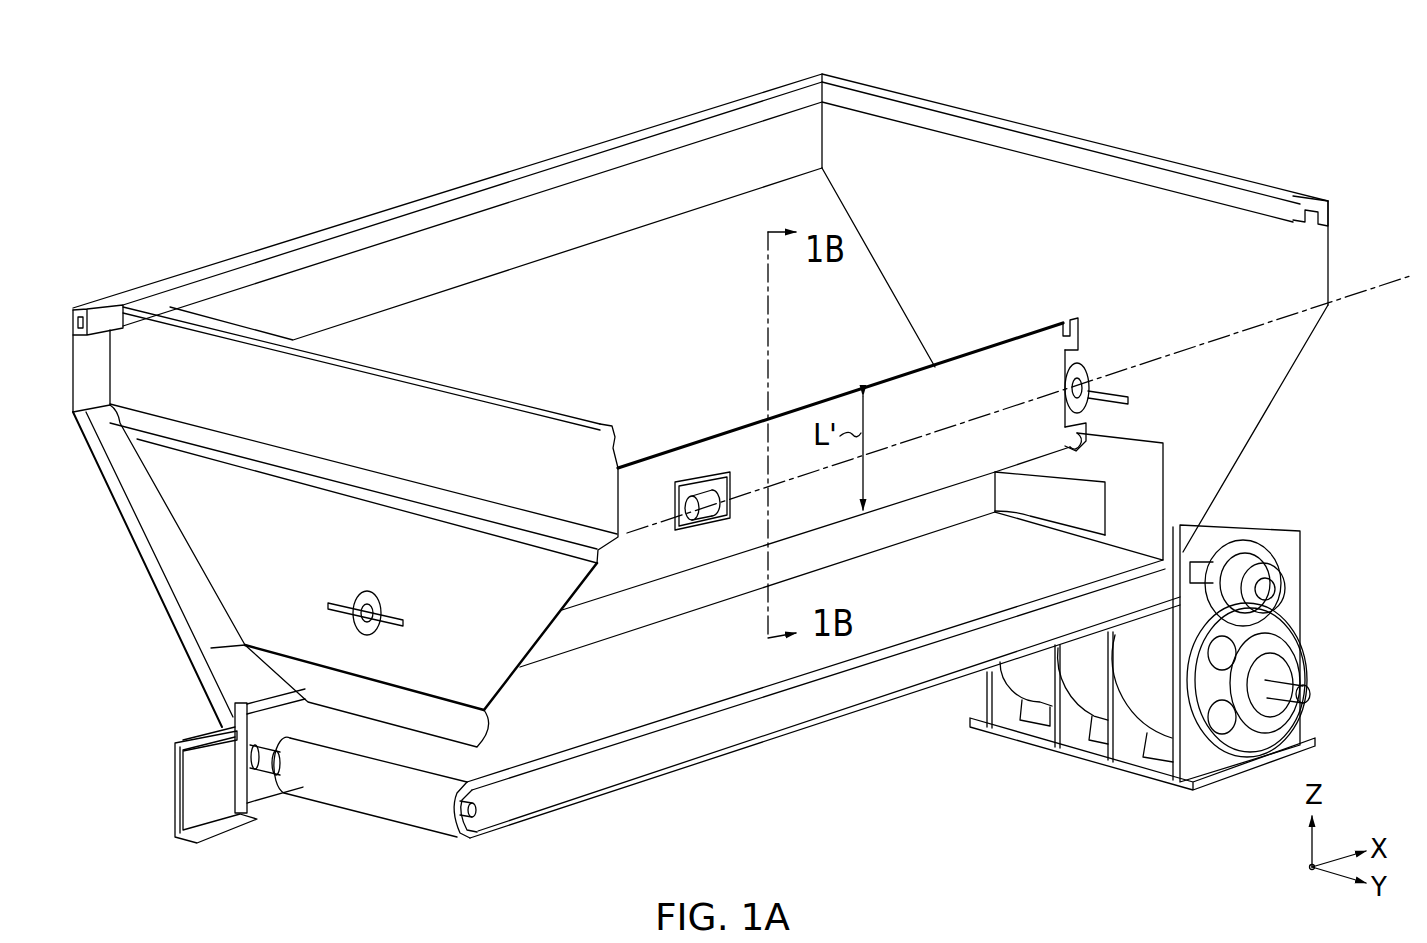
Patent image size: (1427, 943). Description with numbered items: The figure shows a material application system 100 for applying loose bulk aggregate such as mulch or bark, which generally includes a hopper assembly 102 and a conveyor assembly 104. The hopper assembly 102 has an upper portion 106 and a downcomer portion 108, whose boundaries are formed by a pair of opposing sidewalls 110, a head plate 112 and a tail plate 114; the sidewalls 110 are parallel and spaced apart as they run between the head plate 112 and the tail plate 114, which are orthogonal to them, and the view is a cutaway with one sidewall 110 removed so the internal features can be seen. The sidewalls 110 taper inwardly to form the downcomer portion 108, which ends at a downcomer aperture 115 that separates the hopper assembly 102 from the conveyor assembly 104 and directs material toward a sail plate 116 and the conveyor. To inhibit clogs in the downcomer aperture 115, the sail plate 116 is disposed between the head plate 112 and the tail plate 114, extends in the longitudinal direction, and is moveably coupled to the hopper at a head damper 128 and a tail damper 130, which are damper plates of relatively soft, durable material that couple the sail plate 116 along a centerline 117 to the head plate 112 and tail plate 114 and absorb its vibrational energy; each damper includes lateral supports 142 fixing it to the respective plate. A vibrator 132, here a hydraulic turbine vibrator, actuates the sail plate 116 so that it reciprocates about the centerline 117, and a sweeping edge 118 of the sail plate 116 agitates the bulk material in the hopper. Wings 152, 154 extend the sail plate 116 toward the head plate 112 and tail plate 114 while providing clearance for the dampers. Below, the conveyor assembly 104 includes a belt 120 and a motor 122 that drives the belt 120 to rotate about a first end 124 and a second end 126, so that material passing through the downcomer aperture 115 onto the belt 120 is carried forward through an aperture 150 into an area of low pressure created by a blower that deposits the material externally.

The material application system 100 is at (1204, 130).
The hopper assembly 102 is at (280, 166).
The conveyor assembly 104 is at (830, 754).
The upper portion 106 is at (478, 146).
The downcomer portion 108 is at (922, 292).
The opposing sidewalls 110 is at (704, 284).
The head plate 112 is at (383, 436).
The tail plate 114 is at (1126, 276).
The downcomer aperture 115 is at (870, 538).
The sail plate 116 is at (968, 419).
The centerline 117 is at (1392, 283).
The sweeping edge 118 is at (1065, 450).
The belt 120 is at (733, 678).
The motor 122 is at (1300, 584).
The first end 124 is at (1183, 528).
The second end 126 is at (322, 828).
The head damper 128 is at (366, 602).
The tail damper 130 is at (1081, 368).
The vibrator 132 is at (722, 495).
The lateral supports 142 is at (1128, 397).
The aperture 150 is at (1142, 492).
The wing 152 is at (1062, 338).
The wing 154 is at (1075, 438).